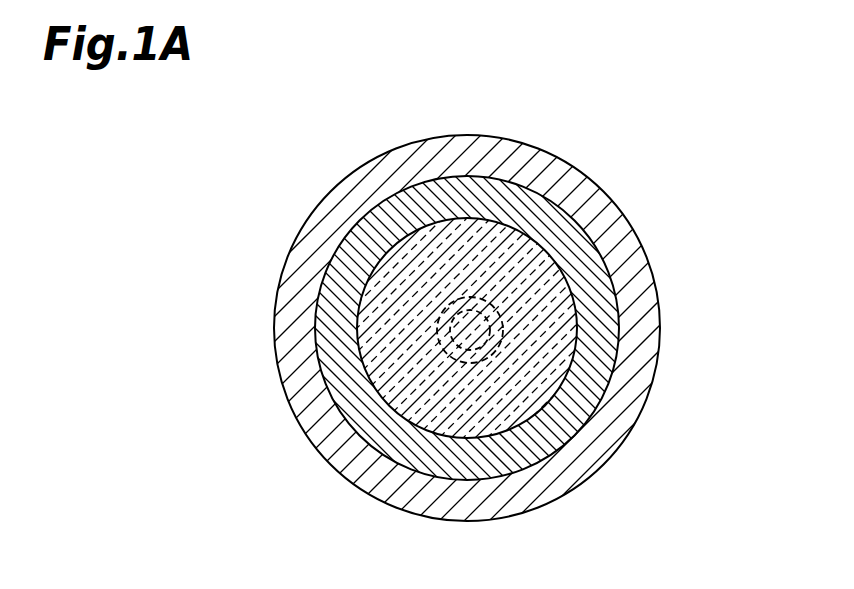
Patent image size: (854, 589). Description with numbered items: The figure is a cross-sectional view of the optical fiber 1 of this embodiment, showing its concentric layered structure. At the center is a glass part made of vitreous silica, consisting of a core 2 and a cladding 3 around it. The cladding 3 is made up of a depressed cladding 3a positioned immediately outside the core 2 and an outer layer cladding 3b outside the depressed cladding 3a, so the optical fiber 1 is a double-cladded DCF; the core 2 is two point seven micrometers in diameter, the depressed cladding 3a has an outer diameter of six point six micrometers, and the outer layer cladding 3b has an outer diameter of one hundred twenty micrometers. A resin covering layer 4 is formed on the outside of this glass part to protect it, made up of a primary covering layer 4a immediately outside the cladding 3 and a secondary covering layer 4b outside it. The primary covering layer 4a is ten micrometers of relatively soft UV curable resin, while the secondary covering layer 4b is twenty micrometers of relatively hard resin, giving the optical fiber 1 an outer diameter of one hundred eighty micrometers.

The optical fiber 1 is at (505, 74).
The core 2 is at (471, 320).
The cladding 3 is at (719, 412).
The depressed cladding 3a is at (495, 338).
The outer layer cladding 3b is at (520, 383).
The resin covering layer 4 is at (678, 508).
The primary covering layer 4a is at (532, 450).
The secondary covering layer 4b is at (528, 498).